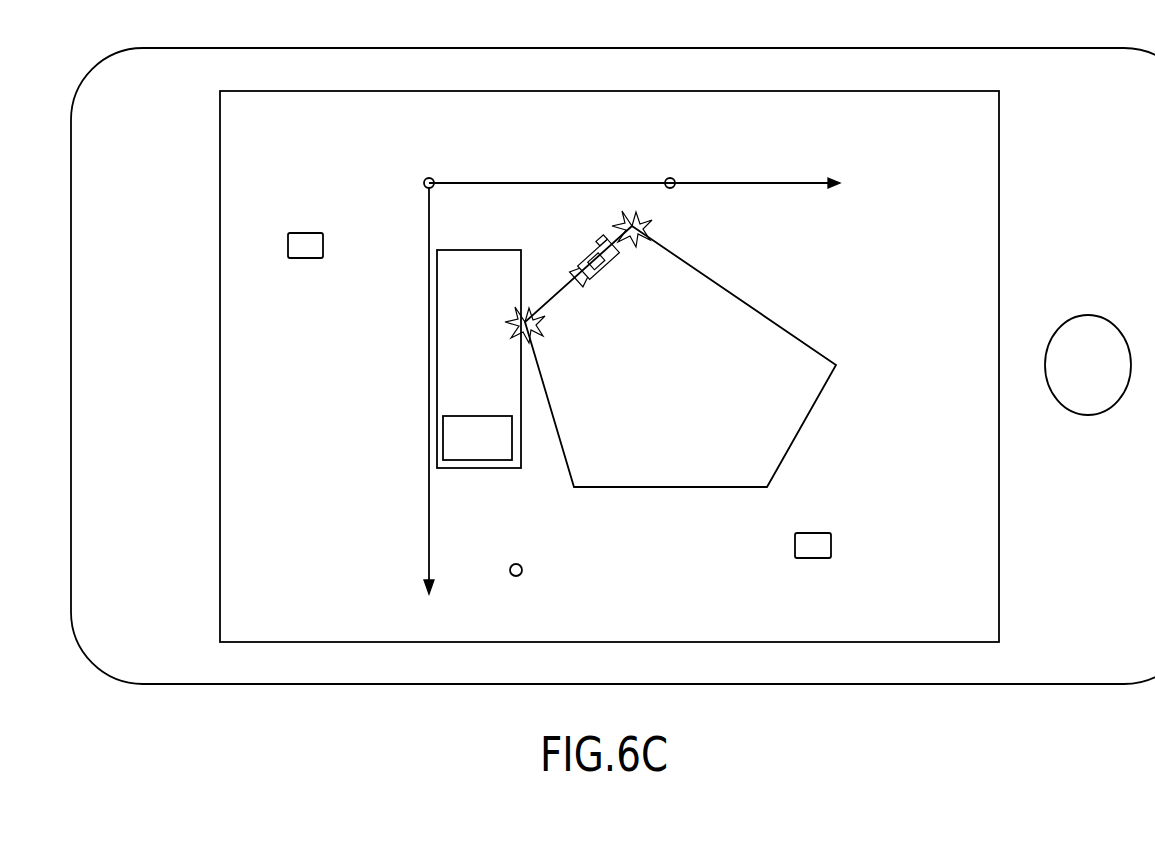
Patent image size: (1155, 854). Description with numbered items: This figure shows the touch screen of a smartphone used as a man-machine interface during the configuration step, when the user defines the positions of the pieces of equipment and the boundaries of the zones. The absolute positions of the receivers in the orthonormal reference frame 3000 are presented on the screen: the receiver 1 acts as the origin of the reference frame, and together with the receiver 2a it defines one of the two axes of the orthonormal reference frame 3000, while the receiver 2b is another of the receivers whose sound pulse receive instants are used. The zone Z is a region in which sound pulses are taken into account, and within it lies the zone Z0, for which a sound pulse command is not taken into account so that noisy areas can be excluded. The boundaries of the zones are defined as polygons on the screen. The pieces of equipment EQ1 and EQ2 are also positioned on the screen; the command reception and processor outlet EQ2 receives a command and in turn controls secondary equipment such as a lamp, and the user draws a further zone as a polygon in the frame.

The receiver 1 is at (434, 179).
The orthonormal reference frame 3000 is at (528, 183).
The receiver 2a is at (670, 178).
The receiver 2b is at (517, 564).
The zone Z is at (480, 249).
The zone Z0 is at (482, 415).
The piece of equipment EQ1 is at (831, 546).
The command reception and processor outlet EQ2 is at (323, 246).